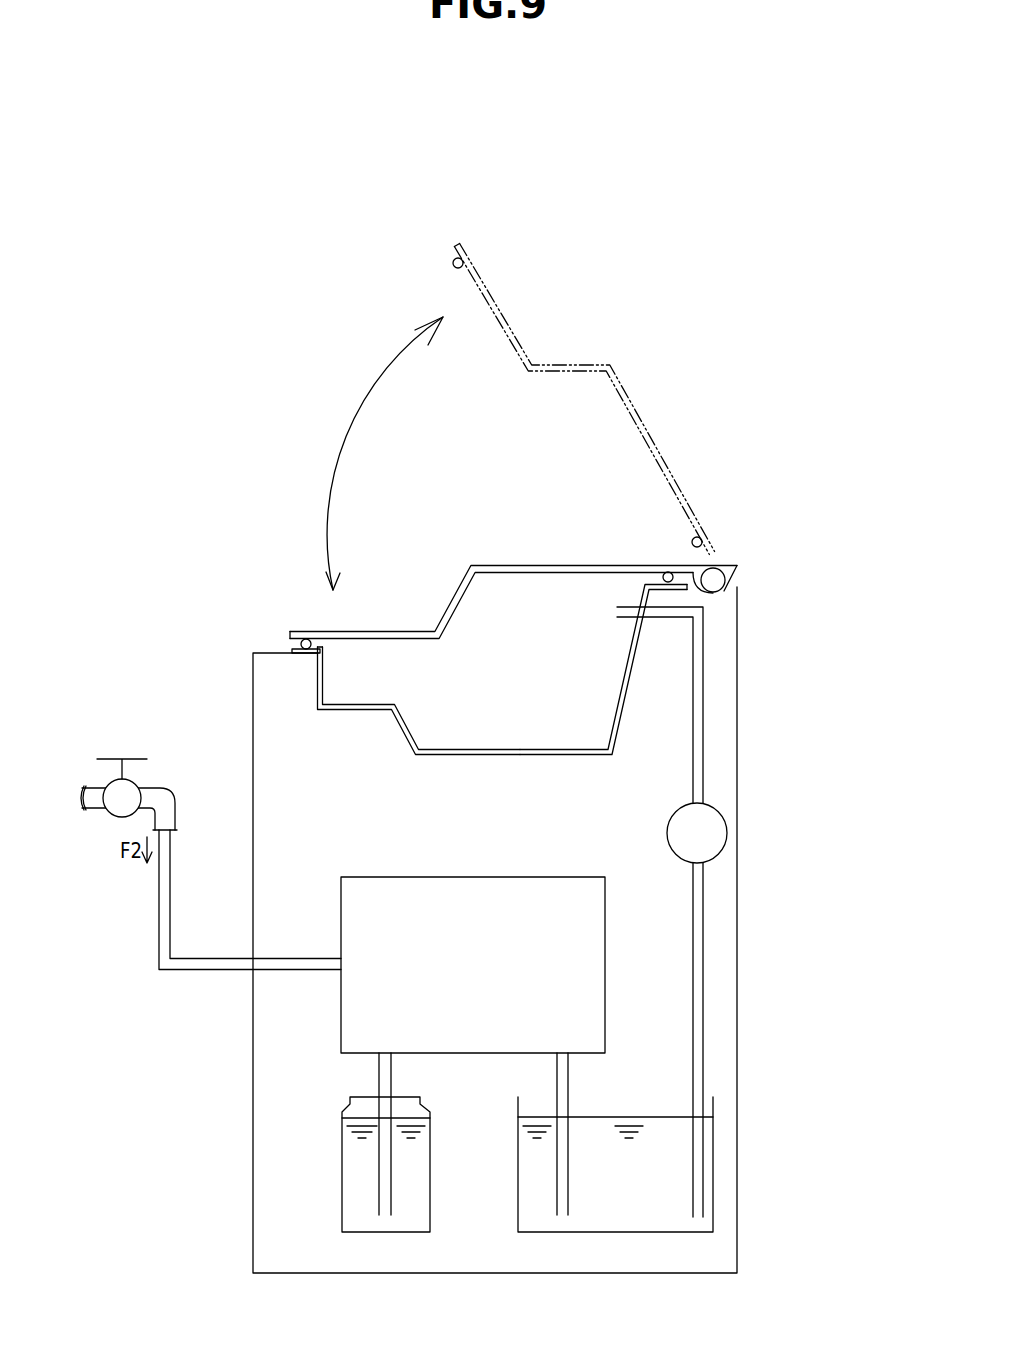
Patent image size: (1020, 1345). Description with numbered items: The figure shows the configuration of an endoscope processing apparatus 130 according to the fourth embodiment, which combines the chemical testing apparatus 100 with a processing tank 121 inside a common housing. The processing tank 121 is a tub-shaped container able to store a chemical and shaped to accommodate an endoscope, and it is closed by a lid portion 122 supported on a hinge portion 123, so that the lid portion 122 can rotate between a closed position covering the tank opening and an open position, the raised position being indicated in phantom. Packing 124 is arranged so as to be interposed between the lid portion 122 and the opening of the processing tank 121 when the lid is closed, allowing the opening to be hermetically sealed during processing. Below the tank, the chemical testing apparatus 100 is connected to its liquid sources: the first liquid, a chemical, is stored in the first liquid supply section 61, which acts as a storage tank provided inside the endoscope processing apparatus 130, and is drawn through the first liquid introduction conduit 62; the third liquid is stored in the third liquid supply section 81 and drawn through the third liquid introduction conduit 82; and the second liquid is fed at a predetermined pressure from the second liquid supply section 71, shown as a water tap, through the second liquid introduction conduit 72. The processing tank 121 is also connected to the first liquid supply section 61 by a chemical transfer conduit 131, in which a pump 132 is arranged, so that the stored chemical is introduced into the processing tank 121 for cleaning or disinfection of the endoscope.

The endoscope processing apparatus 130 is at (209, 493).
The processing tank 121 is at (330, 712).
The lid portion 122 is at (388, 630).
The hinge portion 123 is at (718, 593).
The packing 124 is at (298, 648).
The chemical transfer conduit 131 is at (704, 742).
The pump 132 is at (727, 827).
The chemical testing apparatus 100 is at (363, 876).
The second liquid supply section 71 is at (110, 816).
The second liquid introduction conduit 72 is at (159, 935).
The third liquid supply section 81 is at (342, 1190).
The third liquid introduction conduit 82 is at (392, 1082).
The first liquid supply section 61 is at (518, 1200).
The first liquid introduction conduit 62 is at (569, 1073).